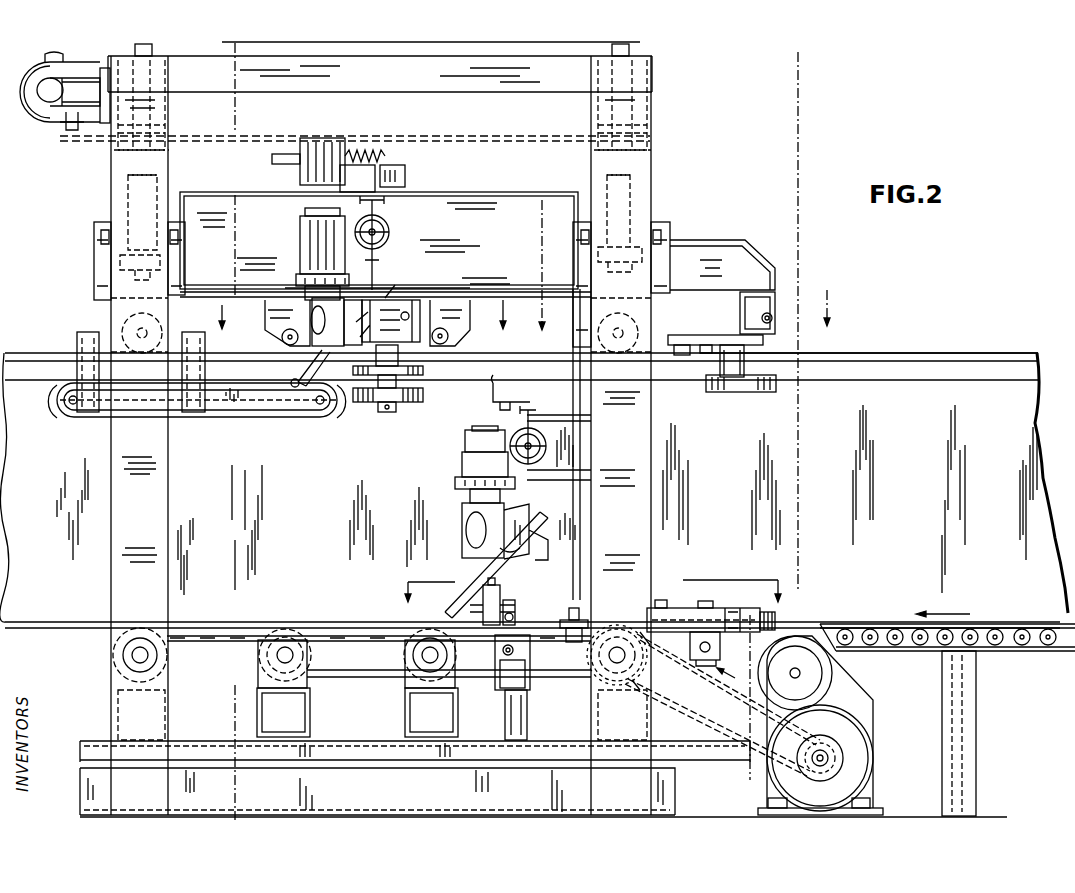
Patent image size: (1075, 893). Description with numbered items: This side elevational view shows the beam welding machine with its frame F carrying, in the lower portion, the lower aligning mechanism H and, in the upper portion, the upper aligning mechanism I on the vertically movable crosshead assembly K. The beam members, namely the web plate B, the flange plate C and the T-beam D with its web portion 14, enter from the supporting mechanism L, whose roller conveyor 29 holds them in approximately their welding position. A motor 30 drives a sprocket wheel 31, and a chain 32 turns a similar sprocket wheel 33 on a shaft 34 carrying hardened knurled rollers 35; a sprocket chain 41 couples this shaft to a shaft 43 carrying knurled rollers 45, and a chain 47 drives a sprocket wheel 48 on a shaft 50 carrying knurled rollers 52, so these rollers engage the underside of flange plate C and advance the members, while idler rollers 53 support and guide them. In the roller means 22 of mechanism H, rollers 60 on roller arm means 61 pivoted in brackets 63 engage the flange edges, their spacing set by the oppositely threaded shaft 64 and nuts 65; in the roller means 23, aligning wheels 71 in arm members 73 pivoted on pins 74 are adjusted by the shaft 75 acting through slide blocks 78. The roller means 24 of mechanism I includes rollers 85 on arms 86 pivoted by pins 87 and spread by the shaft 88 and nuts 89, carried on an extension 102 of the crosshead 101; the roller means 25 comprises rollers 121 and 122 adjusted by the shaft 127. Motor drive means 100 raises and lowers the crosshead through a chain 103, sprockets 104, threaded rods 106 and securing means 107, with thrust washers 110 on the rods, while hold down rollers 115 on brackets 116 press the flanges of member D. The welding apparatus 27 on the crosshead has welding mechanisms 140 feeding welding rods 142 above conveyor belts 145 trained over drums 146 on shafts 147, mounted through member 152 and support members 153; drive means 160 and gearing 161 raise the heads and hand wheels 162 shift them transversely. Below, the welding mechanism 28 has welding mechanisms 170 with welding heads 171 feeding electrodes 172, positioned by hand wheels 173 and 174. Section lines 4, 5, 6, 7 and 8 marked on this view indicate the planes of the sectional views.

The web portion 14 is at (1042, 366).
The roller means 22 is at (720, 596).
The roller means 23 is at (518, 592).
The roller means 24 is at (724, 398).
The roller means 25 is at (410, 408).
The welding apparatus 27 is at (288, 265).
The welding mechanism 28 is at (458, 510).
The roller conveyor 29 is at (896, 628).
The motor 30 is at (868, 758).
The sprocket wheel 31 is at (806, 752).
The chain 32 is at (735, 680).
The sprocket wheel 33 is at (638, 672).
The shaft 34 is at (590, 656).
The hardened knurled rollers 35 is at (594, 676).
The sprocket chain 41 is at (462, 680).
The shaft 43 is at (413, 654).
The hardened knurled rollers 45 is at (413, 676).
The chain 47 is at (308, 678).
The sprocket wheel 48 is at (306, 648).
The shaft 50 is at (272, 658).
The hardened knurled rollers 52 is at (268, 636).
The idler rollers 53 is at (116, 636).
The rollers 60 is at (776, 618).
The roller arm means 61 is at (690, 606).
The brackets 63 is at (660, 600).
The shaft 64 is at (712, 647).
The internally threaded nuts 65 is at (718, 660).
The aligning wheels 71 is at (516, 612).
The arm members 73 is at (492, 590).
The pins 74 is at (574, 608).
The shaft 75 is at (502, 650).
The slide blocks 78 is at (499, 660).
The rollers 85 is at (776, 386).
The arms 86 is at (712, 362).
The pins 87 is at (680, 356).
The shaft 88 is at (774, 312).
The internally threaded nuts 89 is at (773, 320).
The motor drive means 100 is at (58, 136).
The crosshead 101 is at (452, 190).
The extension 102 is at (720, 240).
The chain 103 is at (265, 138).
The sprockets 104 is at (172, 134).
The threaded rods 106 is at (118, 172).
The securing means 107 is at (118, 264).
The thrust washers 110 is at (160, 190).
The hold down rollers 115 is at (125, 328).
The brackets 116 is at (268, 332).
The roller 121 is at (426, 395).
The roller 122 is at (426, 370).
The shaft 127 is at (404, 298).
The welding mechanisms 140 is at (309, 222).
The welding rods 142 is at (300, 378).
The conveyor belts 145 is at (283, 410).
The drums 146 is at (68, 418).
The shafts 147 is at (70, 405).
The member 152 is at (248, 410).
The support members 153 is at (78, 342).
The drive means 160 is at (333, 140).
The gearing 161 is at (385, 158).
The hand wheels 162 is at (390, 238).
The welding mechanisms 170 is at (460, 470).
The welding heads 171 is at (462, 442).
The electrodes 172 is at (448, 608).
The hand wheels 173 is at (492, 402).
The hand wheels 174 is at (536, 428).
The section line 4- 4 is at (797, 52).
The section line 5- 5 is at (235, 44).
The section line 6- 6 is at (592, 583).
The section line 7- 7 is at (683, 273).
The section line 8- 8 is at (360, 322).
The web plate B is at (1042, 443).
The flange plate C is at (1034, 624).
The T-beam D is at (899, 354).
The frame F is at (680, 212).
The lower aligning mechanism H is at (684, 568).
The upper aligning mechanism I is at (384, 424).
The crosshead assembly K is at (258, 176).
The supporting mechanism L is at (1004, 680).